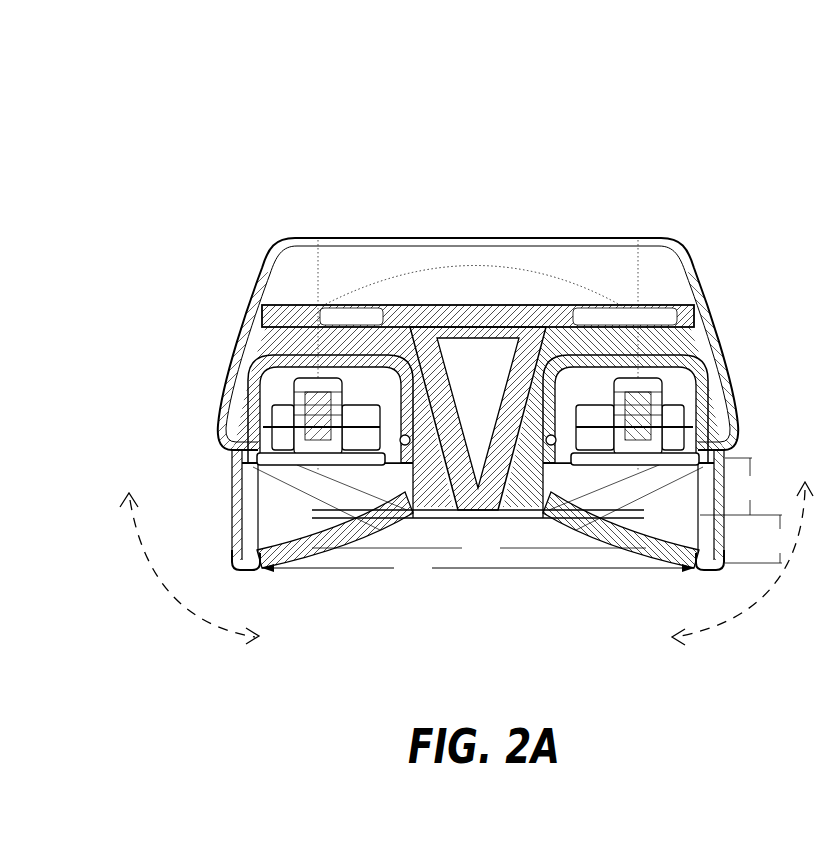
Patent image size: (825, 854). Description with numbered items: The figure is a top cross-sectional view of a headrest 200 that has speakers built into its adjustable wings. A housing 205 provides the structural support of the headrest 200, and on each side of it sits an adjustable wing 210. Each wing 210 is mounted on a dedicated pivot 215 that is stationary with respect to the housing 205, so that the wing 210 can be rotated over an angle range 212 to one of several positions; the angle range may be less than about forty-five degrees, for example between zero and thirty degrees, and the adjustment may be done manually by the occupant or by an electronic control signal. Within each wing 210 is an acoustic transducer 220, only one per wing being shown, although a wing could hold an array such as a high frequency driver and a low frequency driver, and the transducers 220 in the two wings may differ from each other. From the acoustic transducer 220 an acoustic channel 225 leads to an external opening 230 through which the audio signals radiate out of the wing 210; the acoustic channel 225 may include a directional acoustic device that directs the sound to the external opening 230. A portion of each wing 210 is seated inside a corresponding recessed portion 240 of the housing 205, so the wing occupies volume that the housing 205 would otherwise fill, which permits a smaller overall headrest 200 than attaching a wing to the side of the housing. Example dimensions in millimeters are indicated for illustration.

The headrest 200 is at (465, 380).
The housing 205 is at (533, 318).
The adjustable wing 210 is at (243, 505).
The angle range 212 is at (465, 563).
The pivot 215 is at (404, 445).
The acoustic transducer 220 is at (647, 382).
The acoustic channel 225 is at (270, 523).
The external opening 230 is at (268, 555).
The recessed portion 240 is at (405, 397).